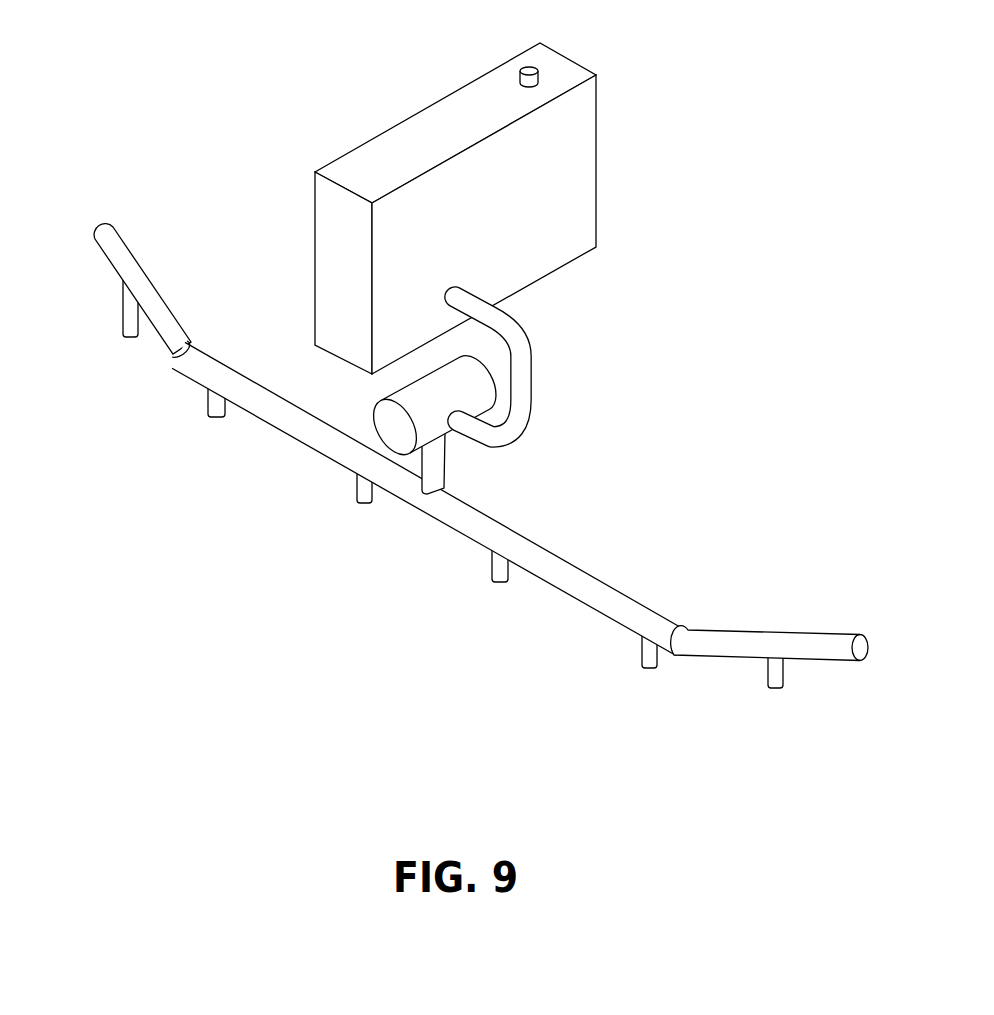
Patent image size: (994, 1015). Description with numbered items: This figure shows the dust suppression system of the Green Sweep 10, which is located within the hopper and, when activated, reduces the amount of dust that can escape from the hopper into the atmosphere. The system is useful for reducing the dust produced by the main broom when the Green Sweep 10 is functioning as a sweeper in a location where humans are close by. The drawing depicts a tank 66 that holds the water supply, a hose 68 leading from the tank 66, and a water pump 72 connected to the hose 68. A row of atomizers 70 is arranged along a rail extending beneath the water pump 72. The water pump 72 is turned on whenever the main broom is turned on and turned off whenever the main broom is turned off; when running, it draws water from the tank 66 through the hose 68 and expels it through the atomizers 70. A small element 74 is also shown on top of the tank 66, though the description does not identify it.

The Green Sweep 10 is at (667, 146).
The tank 66 is at (582, 208).
The hose 68 is at (523, 384).
The atomizers 70 is at (130, 334).
The water pump 72 is at (437, 427).
The button 74 is at (530, 66).